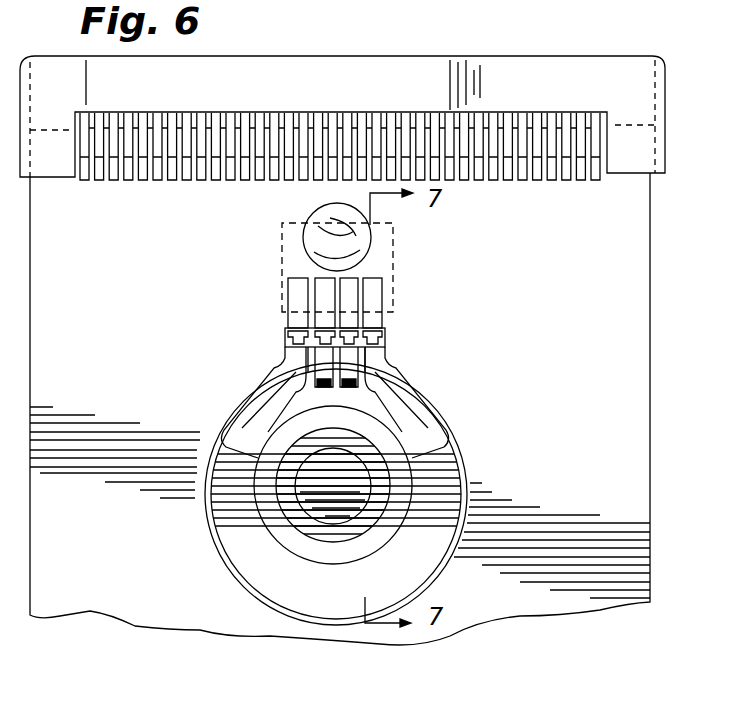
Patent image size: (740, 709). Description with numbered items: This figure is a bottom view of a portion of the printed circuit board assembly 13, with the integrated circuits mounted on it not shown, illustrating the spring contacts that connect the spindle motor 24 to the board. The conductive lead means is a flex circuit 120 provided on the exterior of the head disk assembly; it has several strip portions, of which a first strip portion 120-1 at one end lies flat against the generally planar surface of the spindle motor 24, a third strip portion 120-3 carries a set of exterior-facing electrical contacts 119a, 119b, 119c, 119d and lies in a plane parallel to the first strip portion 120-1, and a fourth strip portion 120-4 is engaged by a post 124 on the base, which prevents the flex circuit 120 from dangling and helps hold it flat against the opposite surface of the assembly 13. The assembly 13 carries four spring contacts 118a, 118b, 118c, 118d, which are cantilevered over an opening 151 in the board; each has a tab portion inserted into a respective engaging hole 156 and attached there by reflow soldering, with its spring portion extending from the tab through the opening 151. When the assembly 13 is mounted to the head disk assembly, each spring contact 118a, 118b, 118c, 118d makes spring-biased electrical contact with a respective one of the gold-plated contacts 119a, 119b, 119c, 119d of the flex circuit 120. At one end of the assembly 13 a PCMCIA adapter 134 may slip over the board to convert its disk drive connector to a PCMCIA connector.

The printed circuit board assembly 13 is at (638, 340).
The PCMCIA adapter 134 is at (528, 56).
The post 124 is at (323, 212).
The flex circuit 120 is at (465, 427).
The first strip portion 120-1 is at (222, 436).
The third strip portion 120-3 is at (283, 312).
The fourth strip portion 120-4 is at (400, 237).
The spring contact 118a is at (290, 298).
The spring contact 118b is at (316, 276).
The spring contact 118c is at (372, 278).
The spring contact 118d is at (380, 292).
The exterior-facing electrical contact 119a is at (337, 376).
The exterior-facing electrical contact 119b is at (285, 362).
The exterior-facing electrical contact 119c is at (337, 376).
The exterior-facing electrical contact 119d is at (395, 370).
The opening 151 is at (386, 333).
The engaging hole 156 is at (395, 312).
The spindle motor 24 is at (248, 562).